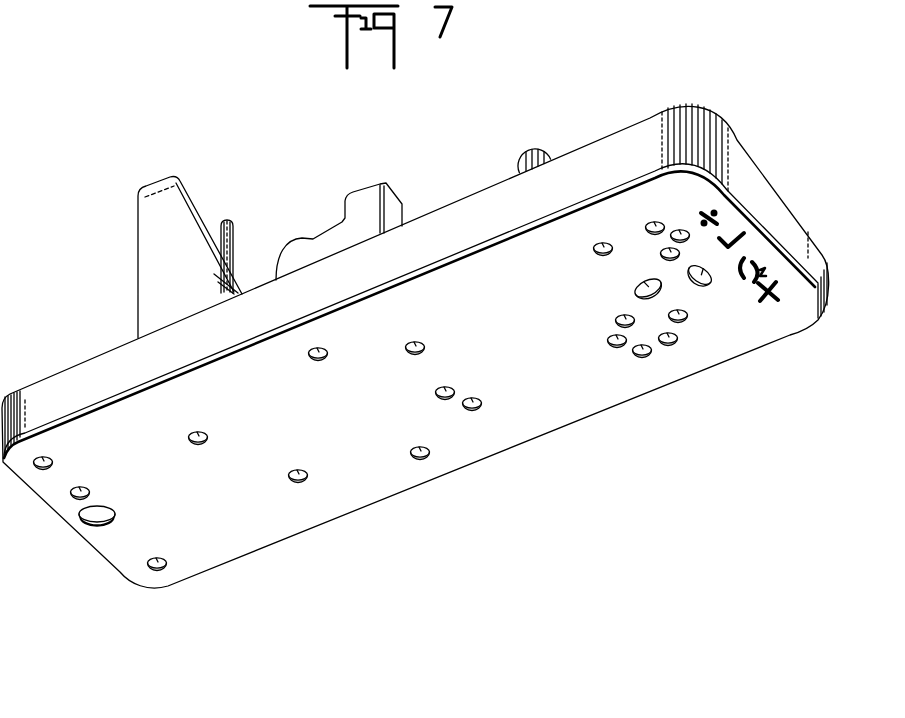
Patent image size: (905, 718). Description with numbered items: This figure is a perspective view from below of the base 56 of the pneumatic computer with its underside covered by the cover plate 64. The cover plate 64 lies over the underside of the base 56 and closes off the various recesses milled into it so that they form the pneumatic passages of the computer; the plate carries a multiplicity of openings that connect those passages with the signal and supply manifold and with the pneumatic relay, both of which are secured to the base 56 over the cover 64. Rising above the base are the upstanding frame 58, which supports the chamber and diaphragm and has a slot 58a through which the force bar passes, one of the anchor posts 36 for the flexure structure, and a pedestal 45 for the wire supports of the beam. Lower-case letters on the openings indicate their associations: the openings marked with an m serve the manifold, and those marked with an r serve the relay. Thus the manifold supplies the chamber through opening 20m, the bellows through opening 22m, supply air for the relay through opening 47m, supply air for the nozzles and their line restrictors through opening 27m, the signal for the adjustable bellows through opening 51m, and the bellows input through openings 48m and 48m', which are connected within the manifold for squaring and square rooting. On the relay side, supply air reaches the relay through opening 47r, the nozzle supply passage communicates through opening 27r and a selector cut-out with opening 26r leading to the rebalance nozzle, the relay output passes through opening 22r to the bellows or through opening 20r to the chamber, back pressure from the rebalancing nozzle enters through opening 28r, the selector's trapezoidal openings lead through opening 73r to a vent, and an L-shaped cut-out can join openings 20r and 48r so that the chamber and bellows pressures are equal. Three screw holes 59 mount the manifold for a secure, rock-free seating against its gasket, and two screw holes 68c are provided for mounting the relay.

The base 56 is at (262, 130).
The upstanding frame 58 is at (148, 254).
The slot 58a is at (233, 290).
The anchor post 36 is at (390, 200).
The pedestal 45 is at (543, 150).
The cover plate 64 is at (300, 541).
The screw holes 59 is at (84, 487).
The manifold opening 22m is at (46, 456).
The manifold opening 20m is at (160, 558).
The manifold opening 27m is at (200, 431).
The manifold opening 48m' is at (325, 462).
The manifold opening 47m is at (418, 342).
The manifold opening 51m is at (447, 384).
The manifold opening 48m is at (496, 395).
The relay opening 22r is at (595, 247).
The screw holes 68c is at (648, 222).
The relay opening 28r is at (682, 231).
The relay opening 27r is at (664, 250).
The relay opening 47r is at (640, 285).
The vent opening 73r is at (705, 283).
The relay opening 20r is at (687, 315).
The relay opening 26r is at (608, 338).
The relay opening 48r is at (675, 341).